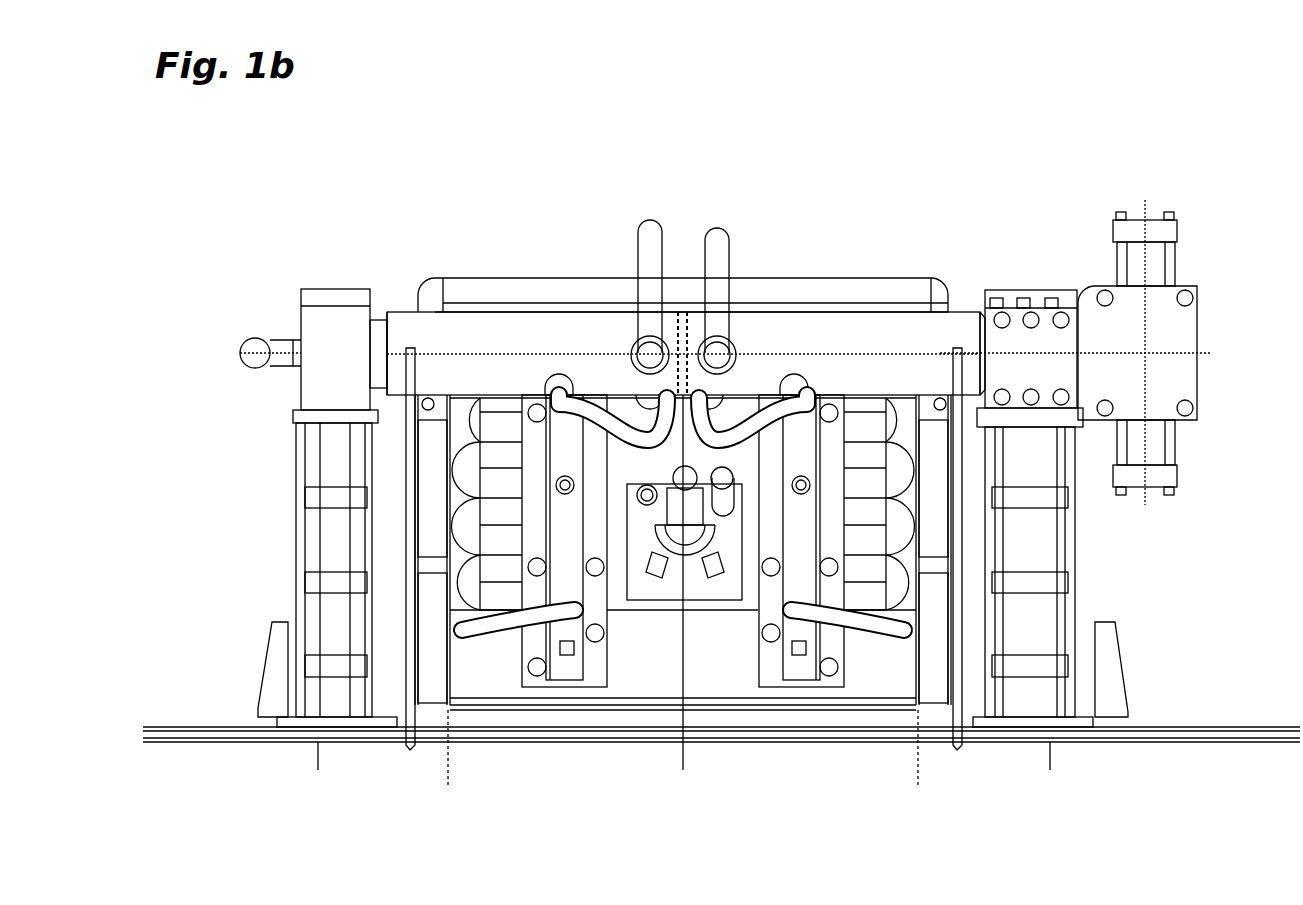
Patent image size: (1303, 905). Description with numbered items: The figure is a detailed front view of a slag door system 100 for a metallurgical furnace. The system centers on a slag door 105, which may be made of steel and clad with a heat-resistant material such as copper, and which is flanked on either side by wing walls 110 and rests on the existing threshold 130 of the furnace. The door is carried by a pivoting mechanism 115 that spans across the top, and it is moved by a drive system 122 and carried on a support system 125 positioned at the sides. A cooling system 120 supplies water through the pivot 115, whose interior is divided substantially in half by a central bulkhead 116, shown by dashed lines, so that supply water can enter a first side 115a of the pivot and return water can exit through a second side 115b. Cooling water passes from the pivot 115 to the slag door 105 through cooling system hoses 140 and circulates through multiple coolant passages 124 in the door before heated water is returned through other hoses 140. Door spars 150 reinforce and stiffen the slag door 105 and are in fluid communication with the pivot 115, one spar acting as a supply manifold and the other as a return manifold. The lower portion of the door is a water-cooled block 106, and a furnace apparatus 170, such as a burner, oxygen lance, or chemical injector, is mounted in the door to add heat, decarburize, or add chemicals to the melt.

The slag door system 100 is at (364, 212).
The slag door 105 is at (656, 717).
The lower portion (block) 106 is at (738, 667).
The wing wall 110 is at (414, 750).
The pivoting mechanism (pivot) 115 is at (400, 310).
The first side of pivot 115a is at (470, 348).
The second side of pivot 115b is at (946, 348).
The central bulkhead 116 is at (683, 312).
The cooling system 120 is at (862, 388).
The drive system 122 is at (1189, 273).
The coolant passages 124 is at (492, 405).
The support system 125 is at (278, 475).
The threshold 130 is at (750, 718).
The cooling system hose 140 is at (717, 228).
The door spar 150 is at (572, 688).
The furnace apparatus 170 is at (672, 592).